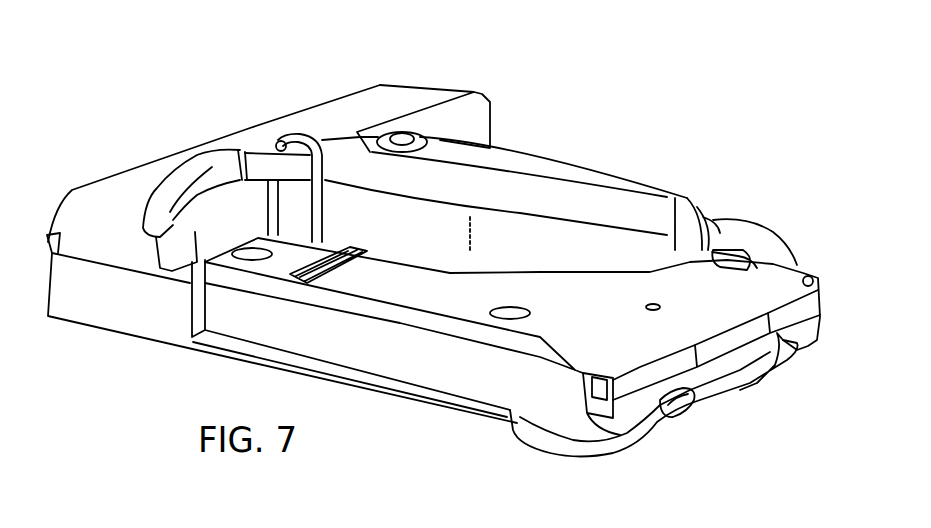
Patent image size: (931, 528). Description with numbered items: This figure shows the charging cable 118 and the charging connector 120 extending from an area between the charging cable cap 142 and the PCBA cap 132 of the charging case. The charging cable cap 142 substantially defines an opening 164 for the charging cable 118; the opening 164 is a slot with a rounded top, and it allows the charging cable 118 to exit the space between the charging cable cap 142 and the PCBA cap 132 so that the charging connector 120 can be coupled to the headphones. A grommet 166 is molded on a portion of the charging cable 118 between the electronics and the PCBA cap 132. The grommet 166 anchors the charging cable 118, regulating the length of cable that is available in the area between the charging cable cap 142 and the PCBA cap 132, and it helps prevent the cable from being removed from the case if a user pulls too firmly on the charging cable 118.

The charging cable 118 is at (250, 150).
The charging connector 120 is at (170, 187).
The PCBA cap 132 is at (683, 274).
The charging cable cap 142 is at (528, 170).
The opening 164 is at (281, 141).
The grommet 166 is at (716, 215).